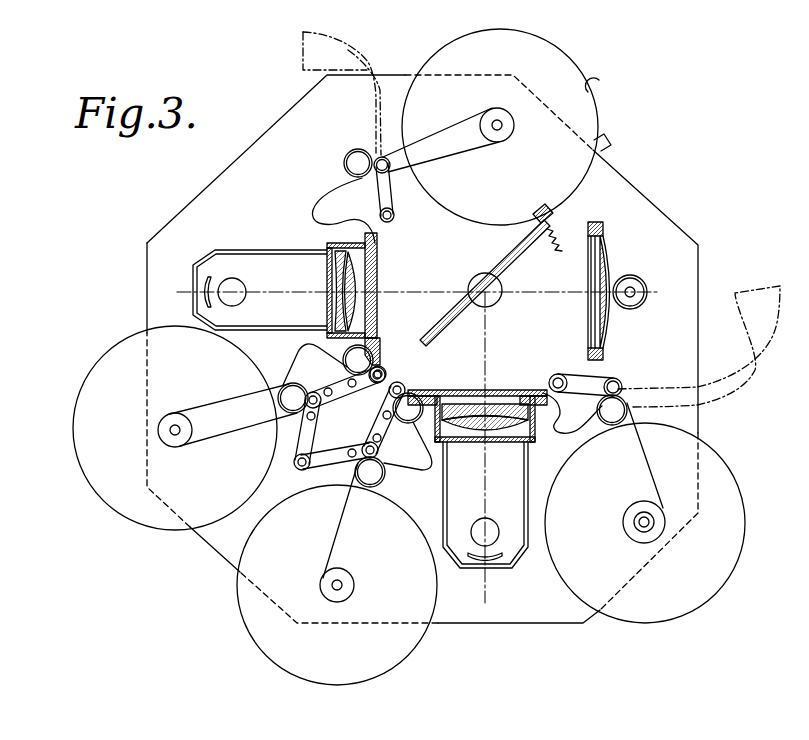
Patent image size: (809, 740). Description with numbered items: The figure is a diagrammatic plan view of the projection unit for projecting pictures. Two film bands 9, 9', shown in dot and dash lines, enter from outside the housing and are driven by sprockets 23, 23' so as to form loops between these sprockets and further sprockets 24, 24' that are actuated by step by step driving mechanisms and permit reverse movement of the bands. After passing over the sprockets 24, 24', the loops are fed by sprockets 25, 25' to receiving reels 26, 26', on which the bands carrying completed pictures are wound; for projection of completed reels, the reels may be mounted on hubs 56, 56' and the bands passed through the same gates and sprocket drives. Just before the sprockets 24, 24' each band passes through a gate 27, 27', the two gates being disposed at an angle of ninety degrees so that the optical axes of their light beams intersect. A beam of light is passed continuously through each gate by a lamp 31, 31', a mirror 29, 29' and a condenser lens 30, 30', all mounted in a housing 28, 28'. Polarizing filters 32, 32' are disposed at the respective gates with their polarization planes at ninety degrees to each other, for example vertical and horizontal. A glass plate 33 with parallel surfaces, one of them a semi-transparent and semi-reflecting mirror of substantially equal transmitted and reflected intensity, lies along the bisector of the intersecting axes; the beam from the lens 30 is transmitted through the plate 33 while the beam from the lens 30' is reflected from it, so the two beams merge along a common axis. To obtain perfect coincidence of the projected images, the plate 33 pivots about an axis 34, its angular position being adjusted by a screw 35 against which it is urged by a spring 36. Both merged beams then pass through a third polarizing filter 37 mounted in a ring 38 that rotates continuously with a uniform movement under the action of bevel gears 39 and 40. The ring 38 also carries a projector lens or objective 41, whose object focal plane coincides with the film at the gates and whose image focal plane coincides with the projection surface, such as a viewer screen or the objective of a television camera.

The band 9 is at (345, 93).
The band 9' is at (709, 346).
The sprocket 23 is at (367, 174).
The sprocket 23' is at (607, 399).
The sprocket 24 is at (377, 363).
The sprocket 24' is at (358, 418).
The sprocket 25 is at (305, 378).
The sprocket 25' is at (393, 459).
The receiving reel 26 is at (185, 428).
The receiving reel 26' is at (337, 574).
The gate 27 is at (370, 299).
The gate 27' is at (477, 404).
The housing 28 is at (260, 277).
The housing 28' is at (495, 514).
The mirror 29 is at (221, 301).
The mirror 29' is at (484, 571).
The condenser lens 30 is at (344, 210).
The condenser lens 30' is at (569, 424).
The lamp 31 is at (236, 279).
The lamp 31' is at (494, 521).
The polarizing filter 32 is at (373, 291).
The polarizing filter 32' is at (485, 398).
The glass plate 33 is at (518, 251).
The axis 34 is at (500, 296).
The screw 35 is at (558, 247).
The spring 36 is at (545, 220).
The third polarizing filter 37 is at (592, 310).
The ring 38 is at (600, 222).
The bevel gear 39 is at (614, 252).
The bevel gear 40 is at (645, 285).
The projector lens 41 is at (609, 329).
The hub 56 is at (497, 127).
The hub 56' is at (645, 513).